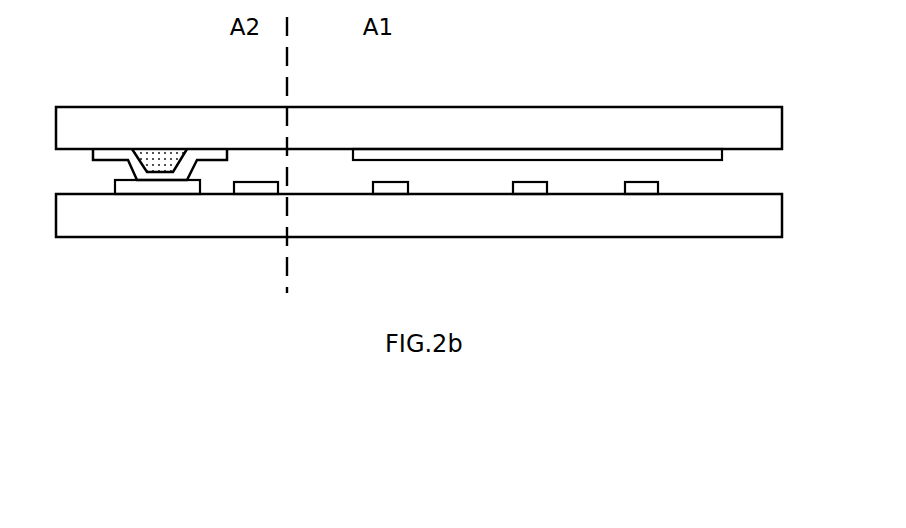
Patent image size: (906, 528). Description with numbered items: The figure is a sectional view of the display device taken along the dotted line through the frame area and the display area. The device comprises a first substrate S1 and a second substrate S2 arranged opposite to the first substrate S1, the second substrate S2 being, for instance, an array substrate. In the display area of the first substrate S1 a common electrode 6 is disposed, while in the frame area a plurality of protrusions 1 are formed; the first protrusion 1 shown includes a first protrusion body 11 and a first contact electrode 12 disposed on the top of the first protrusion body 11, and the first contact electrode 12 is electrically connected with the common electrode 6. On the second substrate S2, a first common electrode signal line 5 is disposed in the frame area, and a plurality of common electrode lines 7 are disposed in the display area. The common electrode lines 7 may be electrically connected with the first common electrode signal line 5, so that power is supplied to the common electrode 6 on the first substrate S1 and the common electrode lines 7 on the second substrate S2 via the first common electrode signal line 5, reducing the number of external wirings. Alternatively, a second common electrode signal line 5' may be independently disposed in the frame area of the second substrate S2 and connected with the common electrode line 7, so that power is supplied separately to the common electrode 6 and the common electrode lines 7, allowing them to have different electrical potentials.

The protrusion 1 is at (172, 103).
The first protrusion body 11 is at (157, 152).
The first contact electrode 12 is at (167, 176).
The first common electrode signal line 5 is at (157, 232).
The second common electrode signal line 5' is at (256, 233).
The common electrode 6 is at (442, 154).
The common electrode line 7 is at (383, 188).
The first substrate S1 is at (642, 128).
The second substrate S2 is at (500, 213).